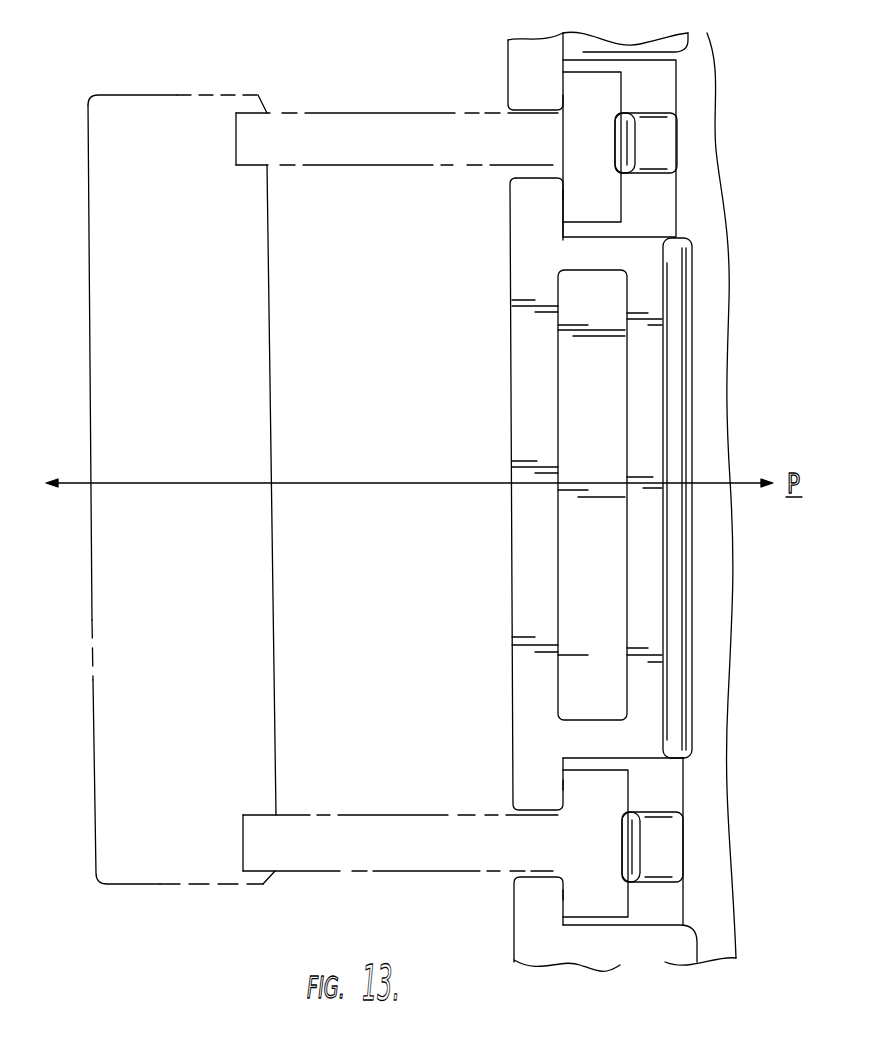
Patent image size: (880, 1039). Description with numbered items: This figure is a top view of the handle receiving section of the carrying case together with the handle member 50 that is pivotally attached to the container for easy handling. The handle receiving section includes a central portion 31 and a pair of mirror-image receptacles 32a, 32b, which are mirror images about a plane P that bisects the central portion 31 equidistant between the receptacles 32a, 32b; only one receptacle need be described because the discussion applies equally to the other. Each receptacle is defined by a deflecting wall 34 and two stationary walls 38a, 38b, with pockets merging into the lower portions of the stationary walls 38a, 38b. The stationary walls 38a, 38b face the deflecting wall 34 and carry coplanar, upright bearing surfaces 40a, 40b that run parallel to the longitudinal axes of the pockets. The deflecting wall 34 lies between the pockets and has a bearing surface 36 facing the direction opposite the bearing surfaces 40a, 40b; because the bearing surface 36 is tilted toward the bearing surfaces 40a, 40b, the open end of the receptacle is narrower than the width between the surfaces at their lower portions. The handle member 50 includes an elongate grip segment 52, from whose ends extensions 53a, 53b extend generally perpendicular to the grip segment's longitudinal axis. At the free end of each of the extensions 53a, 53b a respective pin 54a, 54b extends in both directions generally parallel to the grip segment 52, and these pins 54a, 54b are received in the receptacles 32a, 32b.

The central portion 31 is at (600, 408).
The receptacle 32a is at (695, 172).
The receptacle 32b is at (700, 910).
The deflecting wall 34 is at (657, 142).
The bearing surface 36 is at (604, 133).
The stationary wall 38a is at (525, 92).
The stationary wall 38b is at (527, 200).
The bearing surface 40a is at (577, 98).
The bearing surface 40b is at (578, 193).
The handle member 50 is at (78, 682).
The grip segment 52 is at (117, 773).
The extension 53a is at (320, 137).
The extension 53b is at (335, 853).
The pin 54a is at (600, 93).
The pin 54b is at (607, 795).